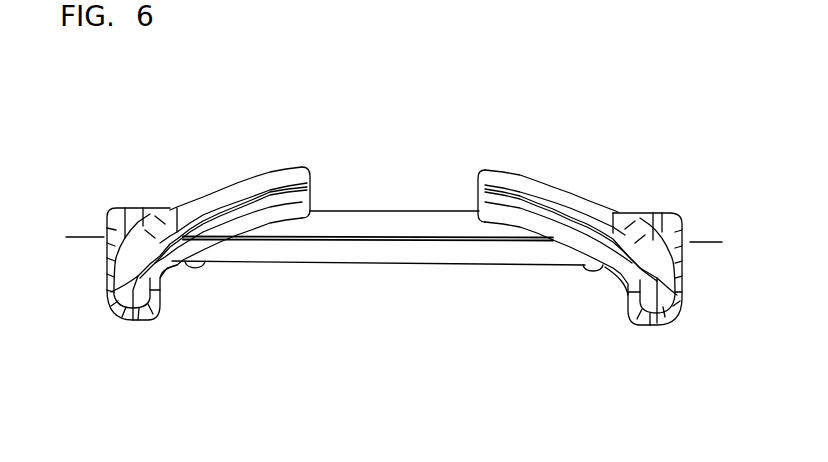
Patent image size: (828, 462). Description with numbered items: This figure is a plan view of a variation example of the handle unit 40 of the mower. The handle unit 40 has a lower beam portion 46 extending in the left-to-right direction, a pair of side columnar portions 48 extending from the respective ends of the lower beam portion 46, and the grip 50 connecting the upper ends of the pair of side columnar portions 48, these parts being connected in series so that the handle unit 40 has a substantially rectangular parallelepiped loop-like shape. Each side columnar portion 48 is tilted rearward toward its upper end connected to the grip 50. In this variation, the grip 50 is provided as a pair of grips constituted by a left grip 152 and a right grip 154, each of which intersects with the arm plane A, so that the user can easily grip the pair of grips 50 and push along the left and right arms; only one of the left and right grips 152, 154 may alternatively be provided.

The handle unit 40 is at (658, 116).
The lower beam portion 46 is at (397, 265).
The side columnar portion 48 is at (103, 250).
The grip 50 is at (410, 97).
The left grip 152 is at (274, 168).
The right grip 154 is at (503, 165).